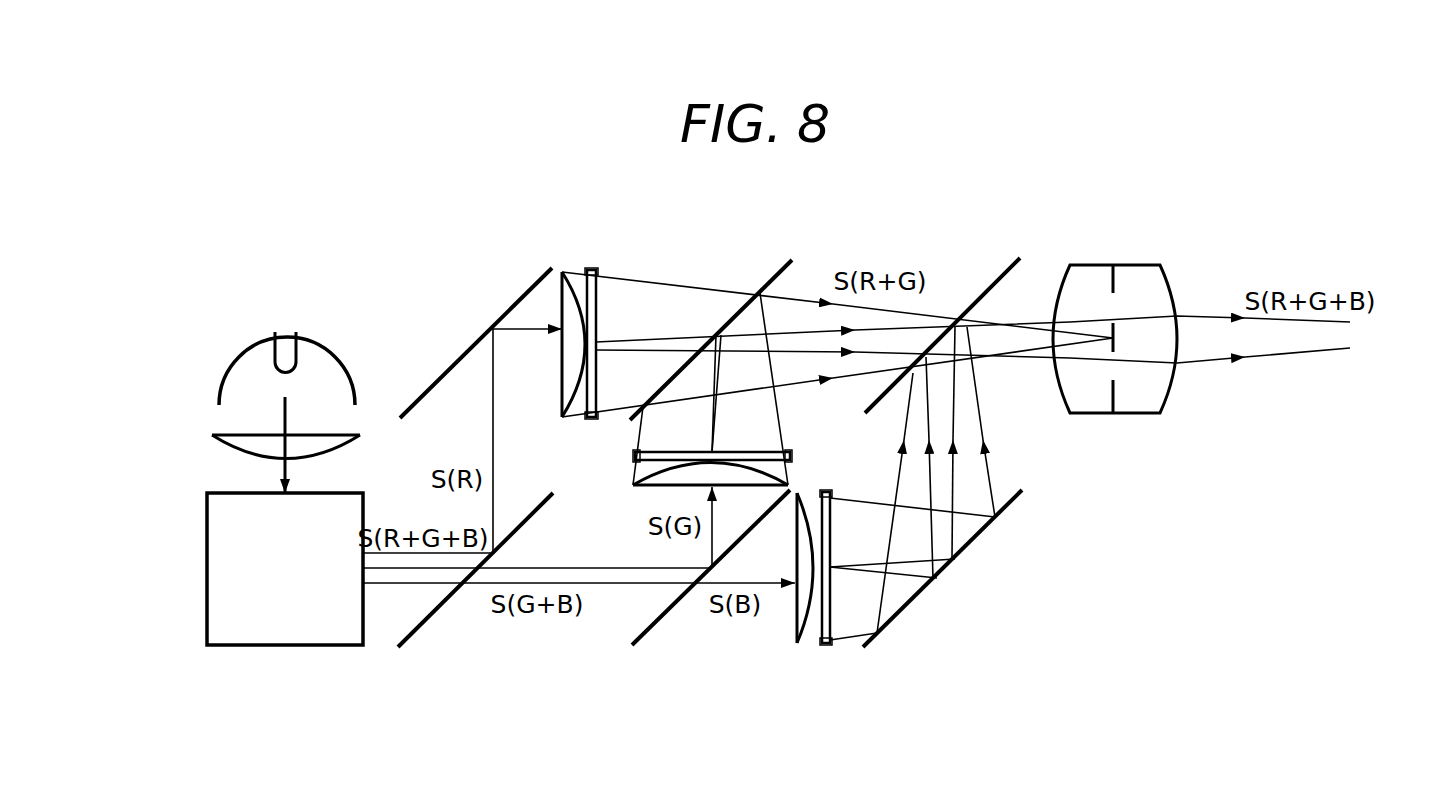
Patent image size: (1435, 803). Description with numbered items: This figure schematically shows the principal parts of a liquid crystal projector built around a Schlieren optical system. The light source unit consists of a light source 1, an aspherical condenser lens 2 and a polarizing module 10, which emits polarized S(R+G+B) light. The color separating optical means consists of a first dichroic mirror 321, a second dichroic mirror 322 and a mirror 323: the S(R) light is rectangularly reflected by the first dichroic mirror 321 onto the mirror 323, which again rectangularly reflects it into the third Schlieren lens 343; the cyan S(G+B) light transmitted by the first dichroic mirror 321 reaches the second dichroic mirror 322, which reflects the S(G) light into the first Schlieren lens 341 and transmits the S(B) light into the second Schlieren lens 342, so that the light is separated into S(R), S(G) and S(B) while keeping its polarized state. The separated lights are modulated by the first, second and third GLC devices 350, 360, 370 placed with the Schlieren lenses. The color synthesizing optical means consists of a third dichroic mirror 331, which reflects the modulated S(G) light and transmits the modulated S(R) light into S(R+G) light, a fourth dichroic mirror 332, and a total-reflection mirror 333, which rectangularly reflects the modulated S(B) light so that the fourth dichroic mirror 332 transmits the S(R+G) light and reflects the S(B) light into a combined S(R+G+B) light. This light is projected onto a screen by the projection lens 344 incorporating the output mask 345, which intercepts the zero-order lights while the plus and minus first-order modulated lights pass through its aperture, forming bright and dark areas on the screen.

The light source 1 is at (265, 333).
The aspherical condenser lens 2 is at (215, 433).
The polarizing module 10 is at (318, 645).
The first dichroic mirror 321 is at (408, 637).
The second dichroic mirror 322 is at (642, 640).
The mirror 323 is at (415, 400).
The third dichroic mirror 331 is at (770, 290).
The fourth dichroic mirror 332 is at (985, 300).
The total-reflection mirror 333 is at (977, 537).
The first Schlieren lens 341 is at (650, 478).
The second Schlieren lens 342 is at (797, 630).
The third Schlieren lens 343 is at (560, 295).
The projection lens 344 is at (1125, 265).
The output mask 345 is at (1120, 413).
The first GLC device 350 is at (792, 455).
The second GLC device 360 is at (824, 645).
The third GLC device 370 is at (591, 268).